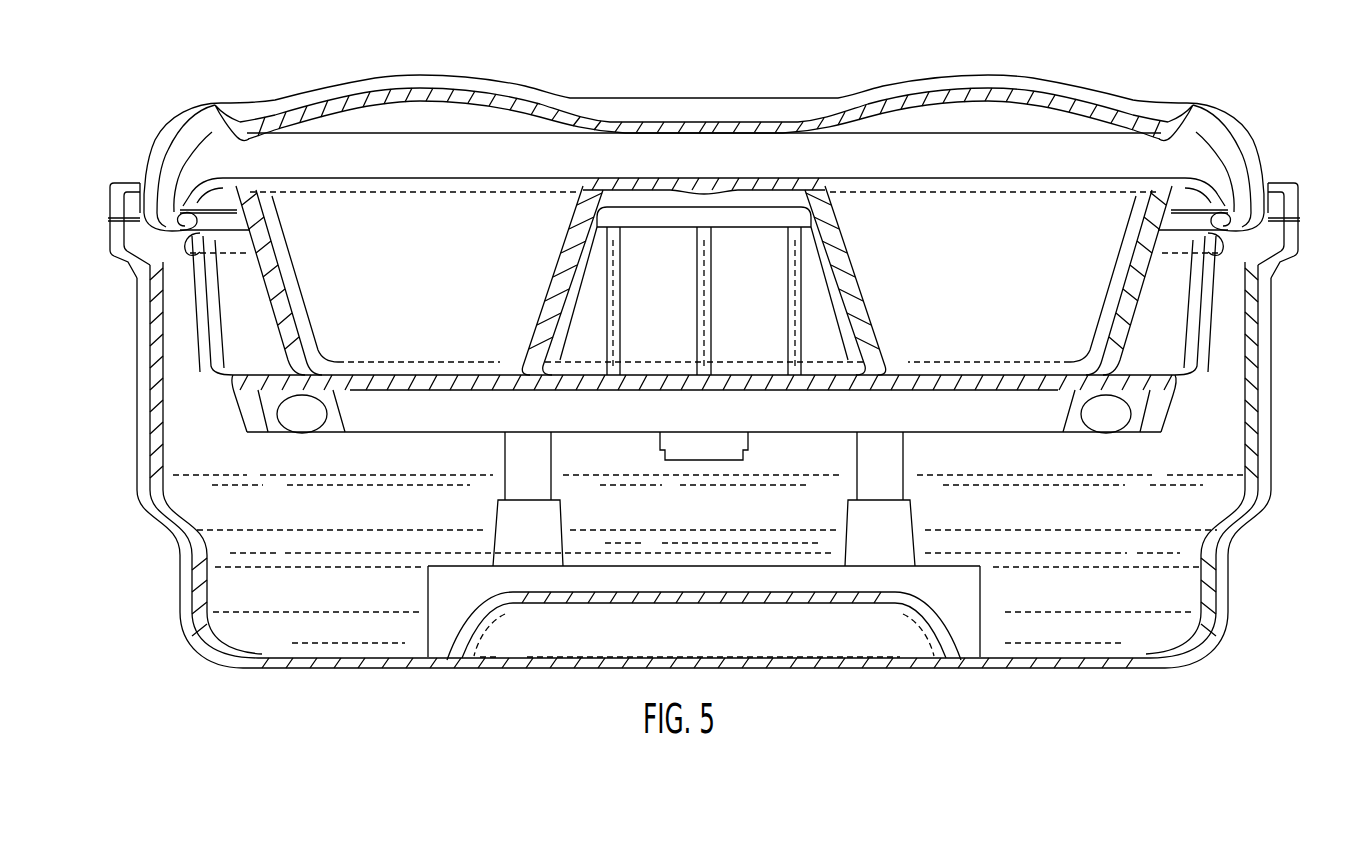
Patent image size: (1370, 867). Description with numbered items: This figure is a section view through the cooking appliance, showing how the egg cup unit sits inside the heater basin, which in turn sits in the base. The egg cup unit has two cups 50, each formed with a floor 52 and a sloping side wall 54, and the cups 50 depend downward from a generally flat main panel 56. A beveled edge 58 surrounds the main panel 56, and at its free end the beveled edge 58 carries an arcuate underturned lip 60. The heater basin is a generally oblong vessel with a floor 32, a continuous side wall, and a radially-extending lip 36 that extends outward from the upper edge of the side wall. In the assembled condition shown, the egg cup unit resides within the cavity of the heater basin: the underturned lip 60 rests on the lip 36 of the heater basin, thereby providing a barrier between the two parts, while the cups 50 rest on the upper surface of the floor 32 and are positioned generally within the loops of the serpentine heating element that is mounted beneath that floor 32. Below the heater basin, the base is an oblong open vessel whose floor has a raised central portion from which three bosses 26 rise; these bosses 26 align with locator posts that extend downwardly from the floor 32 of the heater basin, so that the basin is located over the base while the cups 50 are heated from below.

The bosses 26 is at (882, 535).
The floor 32 is at (995, 390).
The lip 36 is at (200, 262).
The cups 50 is at (757, 208).
The floor 52 is at (1052, 372).
The sloping side wall 54 is at (1118, 298).
The main panel 56 is at (770, 179).
The beveled edge 58 is at (180, 213).
The underturned lip 60 is at (185, 243).